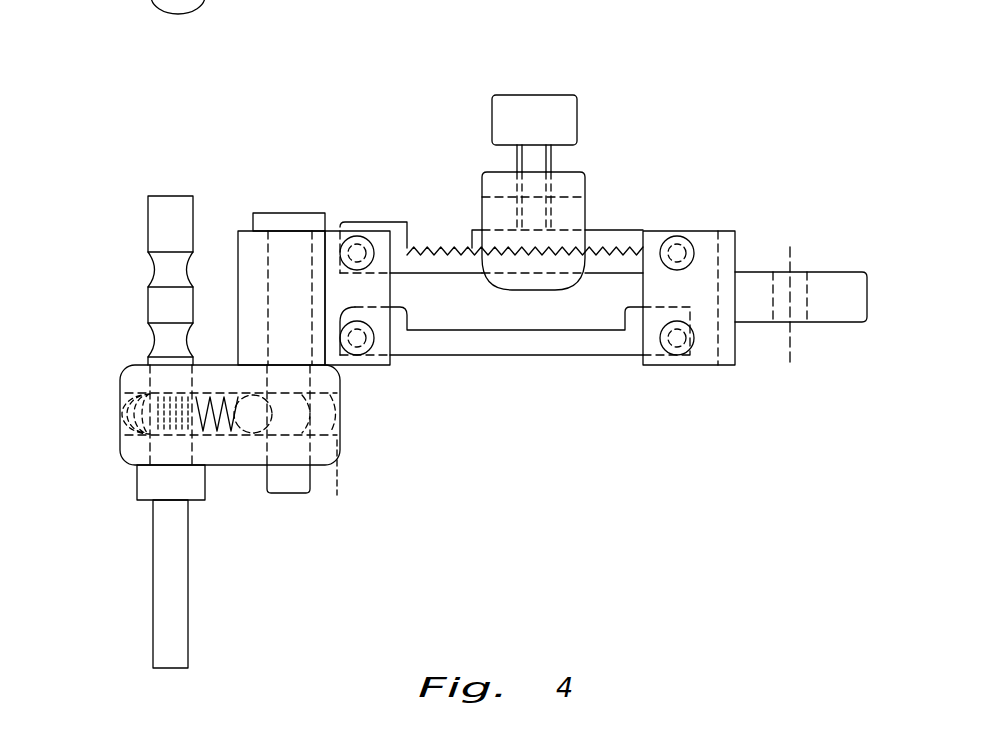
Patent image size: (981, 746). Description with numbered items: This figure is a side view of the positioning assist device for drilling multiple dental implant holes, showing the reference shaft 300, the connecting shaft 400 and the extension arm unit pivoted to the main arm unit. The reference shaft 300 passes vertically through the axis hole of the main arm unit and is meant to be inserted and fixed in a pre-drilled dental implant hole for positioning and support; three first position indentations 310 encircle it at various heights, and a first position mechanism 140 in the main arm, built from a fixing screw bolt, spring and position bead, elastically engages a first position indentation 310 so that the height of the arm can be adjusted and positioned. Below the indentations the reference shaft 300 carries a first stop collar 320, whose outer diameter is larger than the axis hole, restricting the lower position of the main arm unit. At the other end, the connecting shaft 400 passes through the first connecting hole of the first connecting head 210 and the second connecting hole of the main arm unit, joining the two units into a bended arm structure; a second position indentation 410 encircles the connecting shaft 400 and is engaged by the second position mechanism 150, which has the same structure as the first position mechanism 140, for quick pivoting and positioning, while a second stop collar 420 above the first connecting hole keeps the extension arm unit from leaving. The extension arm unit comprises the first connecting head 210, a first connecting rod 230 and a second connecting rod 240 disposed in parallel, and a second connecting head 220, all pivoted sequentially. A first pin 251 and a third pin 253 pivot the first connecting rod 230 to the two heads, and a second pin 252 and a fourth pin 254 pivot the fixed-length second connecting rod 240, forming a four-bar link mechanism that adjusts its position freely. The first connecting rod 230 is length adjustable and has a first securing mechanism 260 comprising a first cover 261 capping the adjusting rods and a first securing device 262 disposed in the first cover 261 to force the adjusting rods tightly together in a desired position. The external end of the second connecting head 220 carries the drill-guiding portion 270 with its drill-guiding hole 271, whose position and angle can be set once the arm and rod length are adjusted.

The first position mechanism 140 is at (115, 427).
The second position mechanism 150 is at (237, 443).
The first connecting head 210 is at (333, 231).
The second connecting head 220 is at (660, 230).
The first connecting rod 230 is at (620, 212).
The second connecting rod 240 is at (535, 350).
The first pin 251 is at (358, 252).
The second pin 252 is at (357, 340).
The third pin 253 is at (692, 240).
The fourth pin 254 is at (675, 353).
The first securing mechanism 260 is at (603, 146).
The first cover 261 is at (577, 172).
The first securing device 262 is at (553, 93).
The drill-guiding portion 270 is at (830, 322).
The drill-guiding hole 271 is at (797, 270).
The reference shaft 300 is at (147, 577).
The first position indentation 310 is at (152, 400).
The first stop collar 320 is at (137, 488).
The connecting shaft 400 is at (273, 373).
The second position indentation 410 is at (314, 484).
The second stop collar 420 is at (267, 213).